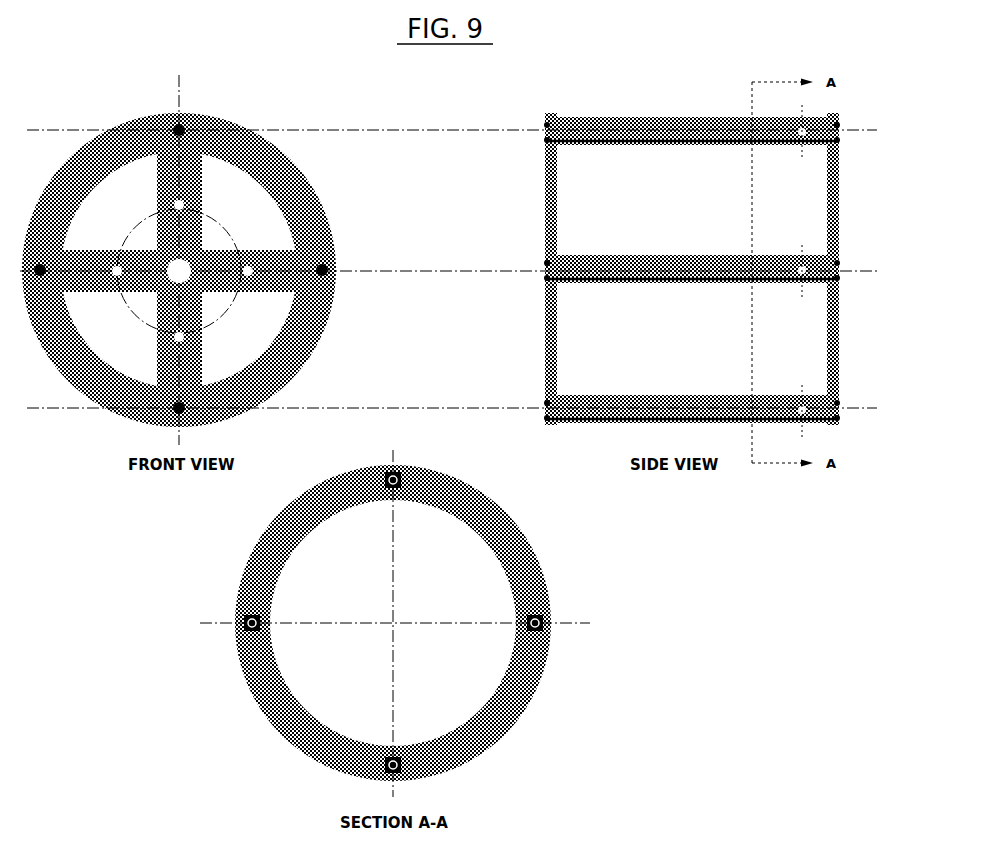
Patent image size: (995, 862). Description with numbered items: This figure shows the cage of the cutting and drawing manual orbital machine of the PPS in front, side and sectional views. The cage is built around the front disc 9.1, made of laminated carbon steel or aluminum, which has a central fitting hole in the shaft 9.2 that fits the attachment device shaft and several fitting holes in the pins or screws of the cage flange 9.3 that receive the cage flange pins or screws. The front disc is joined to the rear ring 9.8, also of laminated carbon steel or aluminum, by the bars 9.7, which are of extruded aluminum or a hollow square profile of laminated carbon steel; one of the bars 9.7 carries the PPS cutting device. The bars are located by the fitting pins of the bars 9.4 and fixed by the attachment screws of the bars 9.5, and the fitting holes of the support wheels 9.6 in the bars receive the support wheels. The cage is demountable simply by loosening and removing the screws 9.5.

The front disc 9.1 is at (90, 398).
The fitting hole in the shaft 9.2 is at (177, 283).
The fitting holes in the pins or screws of the cage flange 9.3 is at (124, 274).
The fitting pins of the bars 9.4 is at (536, 258).
The attachment screws of the bars 9.5 is at (183, 131).
The fitting holes of the support wheels 9.6 is at (800, 392).
The bar 9.7 is at (726, 427).
The rear ring 9.8 is at (549, 668).